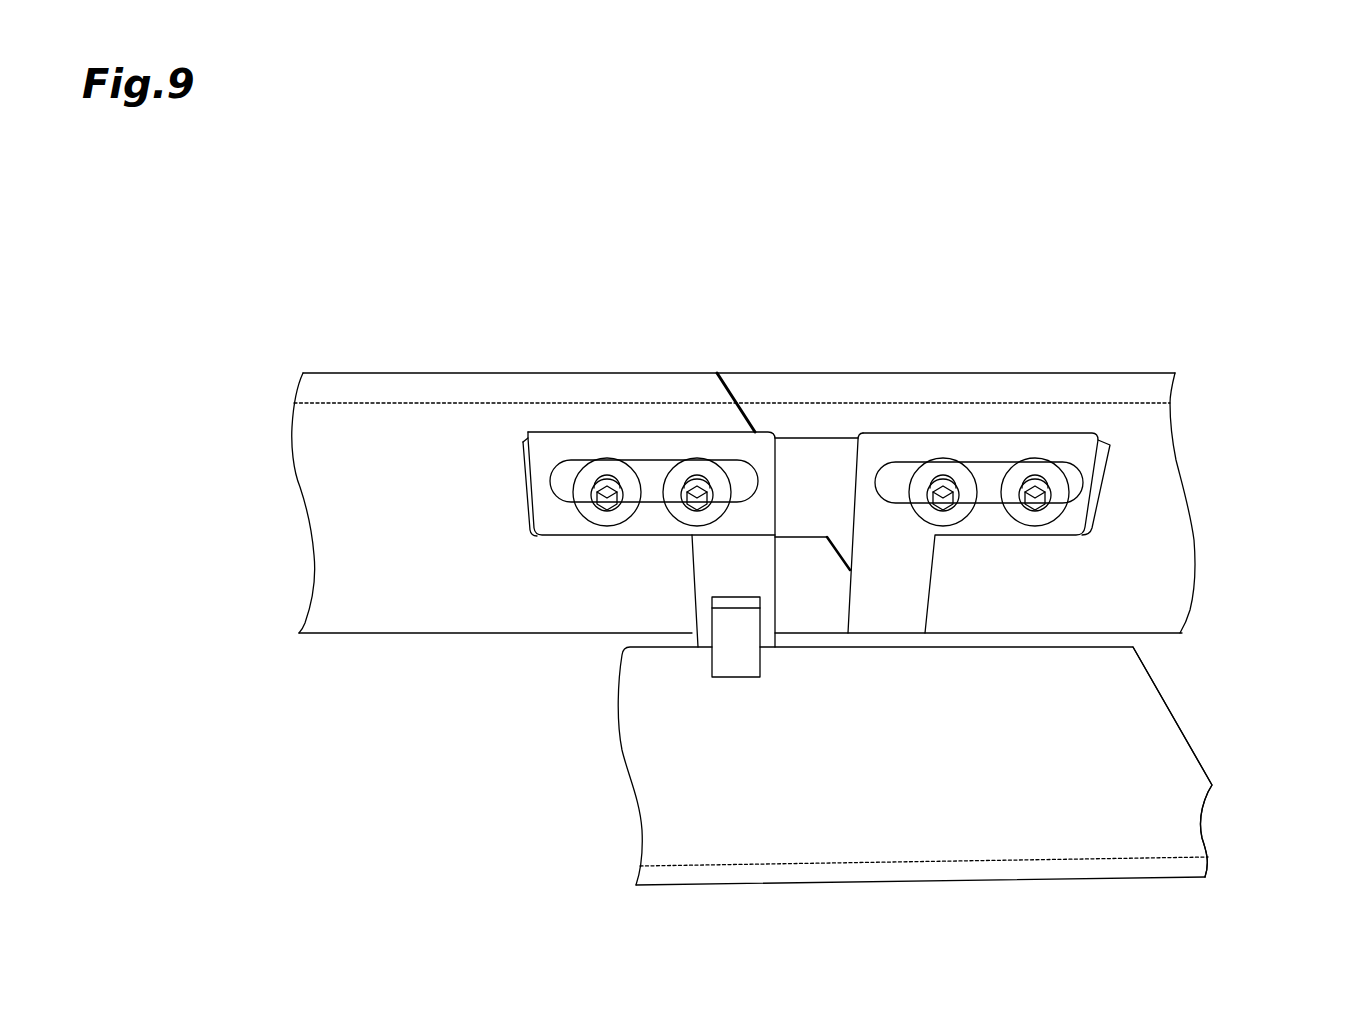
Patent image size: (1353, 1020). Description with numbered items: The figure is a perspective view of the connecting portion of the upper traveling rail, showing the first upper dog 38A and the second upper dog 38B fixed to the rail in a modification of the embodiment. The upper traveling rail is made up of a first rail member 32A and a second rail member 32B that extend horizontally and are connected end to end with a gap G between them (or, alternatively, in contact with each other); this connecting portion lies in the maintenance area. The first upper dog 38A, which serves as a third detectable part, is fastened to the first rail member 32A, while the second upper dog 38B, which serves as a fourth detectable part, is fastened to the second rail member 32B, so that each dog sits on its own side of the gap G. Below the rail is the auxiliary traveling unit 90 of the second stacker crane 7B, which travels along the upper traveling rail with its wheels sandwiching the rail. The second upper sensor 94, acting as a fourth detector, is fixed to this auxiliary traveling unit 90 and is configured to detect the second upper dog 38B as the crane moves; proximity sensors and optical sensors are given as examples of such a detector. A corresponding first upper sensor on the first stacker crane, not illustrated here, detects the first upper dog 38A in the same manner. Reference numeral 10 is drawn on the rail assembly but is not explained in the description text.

The vehicle body panel 10 is at (886, 362).
The second rail member 32B is at (327, 453).
The first rail member 32A is at (1160, 515).
The gap G is at (708, 391).
The second upper dog 38B is at (698, 597).
The first upper dog 38A is at (907, 575).
The second upper sensor 94 is at (740, 663).
The second stacker crane 7B is at (1176, 695).
The auxiliary traveling unit 90 is at (1188, 771).